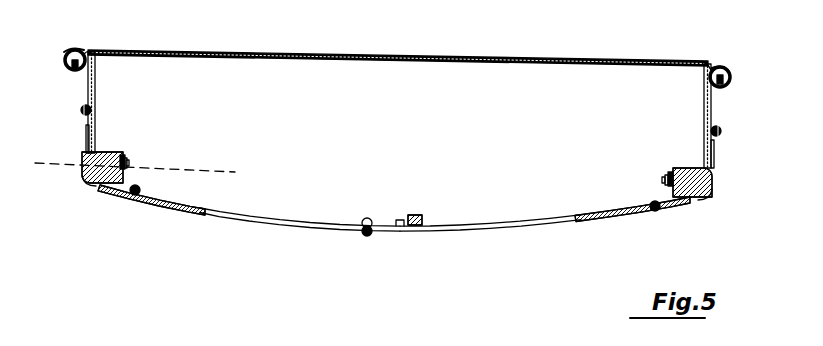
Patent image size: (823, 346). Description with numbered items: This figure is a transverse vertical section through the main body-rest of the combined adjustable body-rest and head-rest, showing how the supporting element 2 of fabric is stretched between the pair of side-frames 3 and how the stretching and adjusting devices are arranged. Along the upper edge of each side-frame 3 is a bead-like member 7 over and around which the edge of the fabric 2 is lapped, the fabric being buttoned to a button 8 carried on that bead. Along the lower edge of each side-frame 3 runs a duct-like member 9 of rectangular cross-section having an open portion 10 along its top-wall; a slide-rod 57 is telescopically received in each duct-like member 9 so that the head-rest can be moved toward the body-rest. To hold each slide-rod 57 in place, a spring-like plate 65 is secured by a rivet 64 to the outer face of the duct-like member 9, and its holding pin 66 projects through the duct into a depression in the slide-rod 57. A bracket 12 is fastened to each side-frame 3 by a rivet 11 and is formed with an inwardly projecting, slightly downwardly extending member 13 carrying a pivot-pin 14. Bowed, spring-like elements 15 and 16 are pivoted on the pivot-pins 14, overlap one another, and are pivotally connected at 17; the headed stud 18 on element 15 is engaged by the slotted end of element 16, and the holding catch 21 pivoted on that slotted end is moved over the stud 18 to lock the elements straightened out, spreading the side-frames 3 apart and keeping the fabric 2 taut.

The supporting element 2 is at (291, 51).
The side-frame 3 is at (96, 90).
The bead-like member 7 is at (62, 53).
The button 8 is at (72, 78).
The duct-like member 9 is at (124, 158).
The open portion 10 is at (103, 153).
The rivet 11 is at (97, 113).
The bracket 12 is at (85, 137).
The inwardly projecting member 13 is at (150, 203).
The pivot-pin 14 is at (133, 196).
The bowed element 15 is at (550, 224).
The bowed element 16 is at (240, 214).
The pivotal connection 17 is at (364, 219).
The headed stud 18 is at (420, 215).
The holding catch 21 is at (400, 219).
The slide-rod 57 is at (89, 192).
The rivet 64 is at (130, 163).
The spring-like plate 65 is at (128, 160).
The holding pin 66 is at (664, 183).